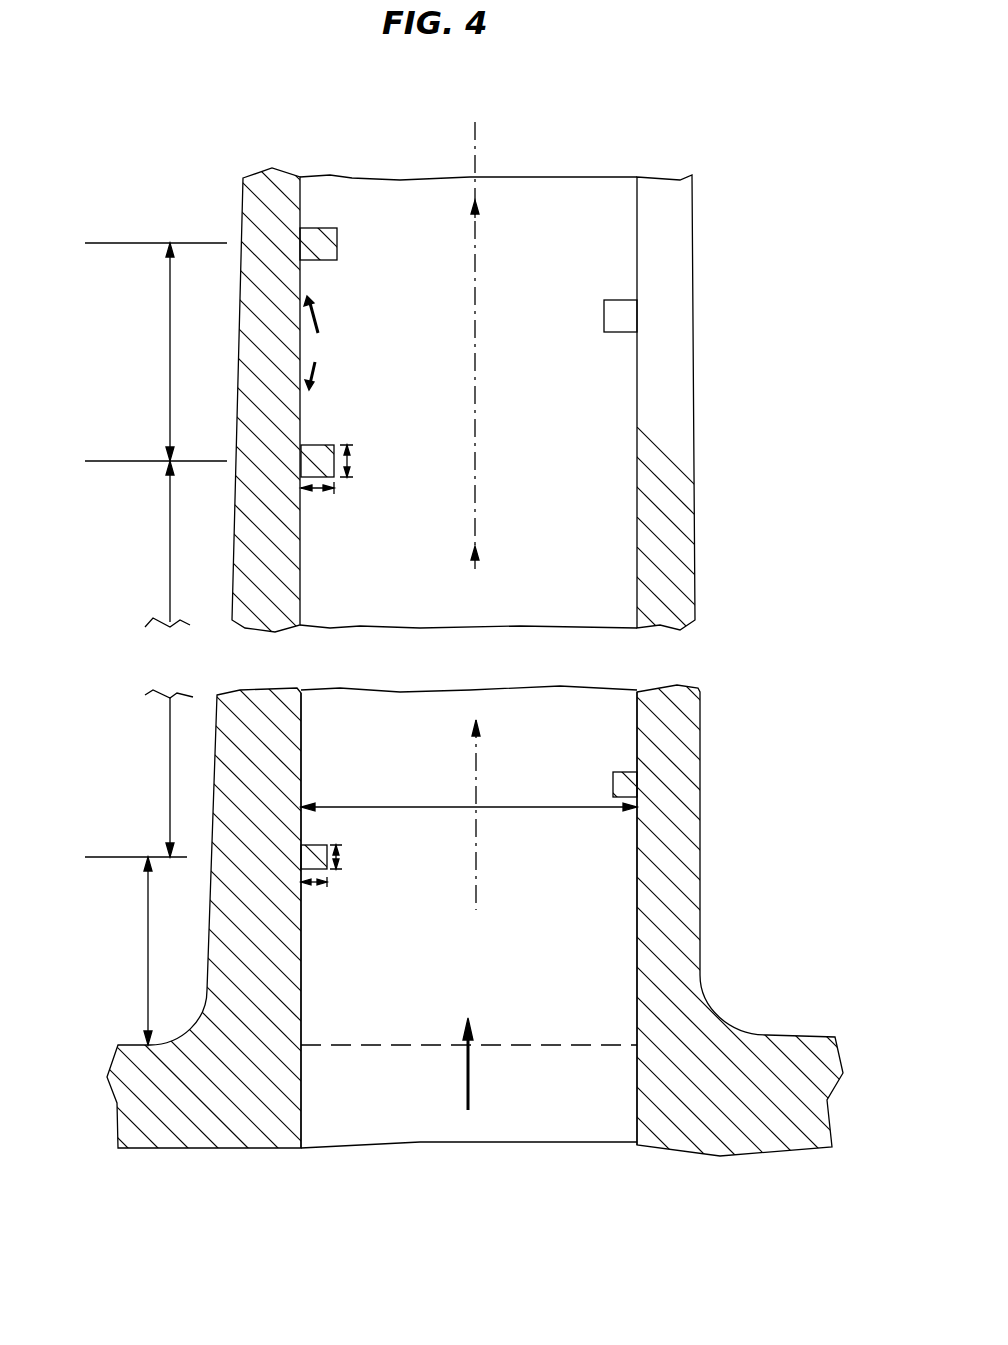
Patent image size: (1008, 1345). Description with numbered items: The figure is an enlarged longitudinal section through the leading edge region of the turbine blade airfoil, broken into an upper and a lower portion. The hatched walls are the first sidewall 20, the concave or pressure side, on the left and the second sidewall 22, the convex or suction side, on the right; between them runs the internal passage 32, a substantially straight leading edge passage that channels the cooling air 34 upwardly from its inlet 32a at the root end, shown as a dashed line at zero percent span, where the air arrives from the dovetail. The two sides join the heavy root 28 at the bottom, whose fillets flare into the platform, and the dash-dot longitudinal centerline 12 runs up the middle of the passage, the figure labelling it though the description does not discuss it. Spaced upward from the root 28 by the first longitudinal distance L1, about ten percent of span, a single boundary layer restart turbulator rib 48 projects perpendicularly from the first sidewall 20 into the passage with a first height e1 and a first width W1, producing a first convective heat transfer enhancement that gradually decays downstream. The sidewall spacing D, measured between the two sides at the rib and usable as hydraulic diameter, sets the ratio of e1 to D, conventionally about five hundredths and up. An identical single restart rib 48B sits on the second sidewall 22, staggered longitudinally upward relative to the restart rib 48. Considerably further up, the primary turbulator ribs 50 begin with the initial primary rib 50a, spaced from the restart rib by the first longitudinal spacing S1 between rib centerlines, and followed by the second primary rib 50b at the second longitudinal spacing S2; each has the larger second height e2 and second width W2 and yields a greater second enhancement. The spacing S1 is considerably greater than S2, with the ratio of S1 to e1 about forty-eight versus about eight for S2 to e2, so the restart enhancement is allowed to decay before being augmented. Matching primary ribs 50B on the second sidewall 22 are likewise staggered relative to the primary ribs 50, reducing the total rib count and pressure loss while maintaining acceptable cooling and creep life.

The longitudinal axis 12 is at (475, 155).
The first sidewall 20 is at (230, 575).
The second sidewall 22 is at (695, 600).
The root 28 is at (813, 1036).
The internal passage 32 is at (621, 842).
The inlet 32a is at (612, 1043).
The cooling air 34 is at (450, 1070).
The boundary layer restart turbulator rib 48 is at (317, 845).
The restart rib 48B is at (613, 780).
The primary turbulator ribs 50 is at (327, 343).
The initial primary rib 50a is at (313, 445).
The second primary rib 50b is at (318, 262).
The primary ribs 50B is at (623, 300).
The first longitudinal spacing S1 is at (170, 770).
The second longitudinal spacing S2 is at (167, 400).
The first longitudinal distance L1 is at (148, 967).
The first width W1 is at (337, 862).
The second width W2 is at (353, 460).
The first height e1 is at (313, 885).
The second height e2 is at (320, 492).
The sidewall spacing D is at (545, 805).